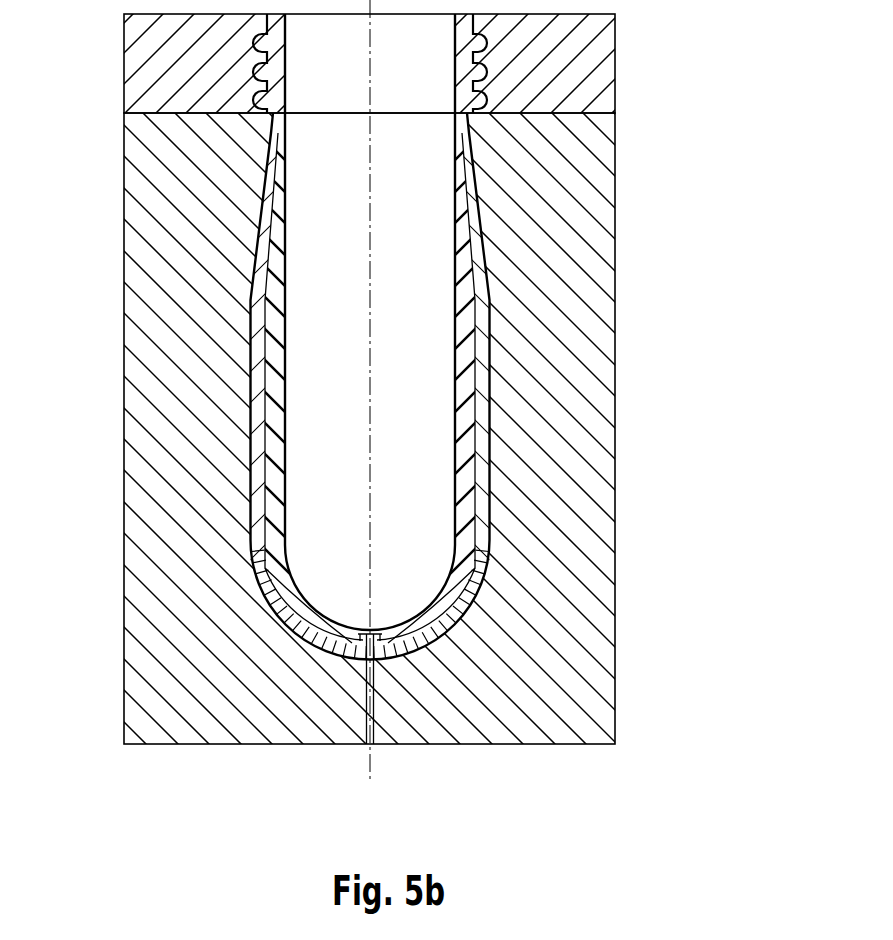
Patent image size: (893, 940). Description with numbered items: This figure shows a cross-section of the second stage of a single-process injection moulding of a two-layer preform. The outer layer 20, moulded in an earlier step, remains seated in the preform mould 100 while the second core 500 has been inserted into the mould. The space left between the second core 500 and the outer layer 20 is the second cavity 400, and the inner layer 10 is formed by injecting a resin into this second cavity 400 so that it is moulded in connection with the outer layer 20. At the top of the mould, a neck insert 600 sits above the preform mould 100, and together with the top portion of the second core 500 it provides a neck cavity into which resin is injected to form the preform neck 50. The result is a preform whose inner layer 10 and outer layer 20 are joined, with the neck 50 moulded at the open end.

The preform neck 50 is at (112, 15).
The neck insert 600 is at (568, 65).
The preform mould 100 is at (565, 362).
The second cavity 400 is at (465, 292).
The outer layer 20 is at (485, 443).
The inner layer 10 is at (465, 498).
The second core 500 is at (422, 563).